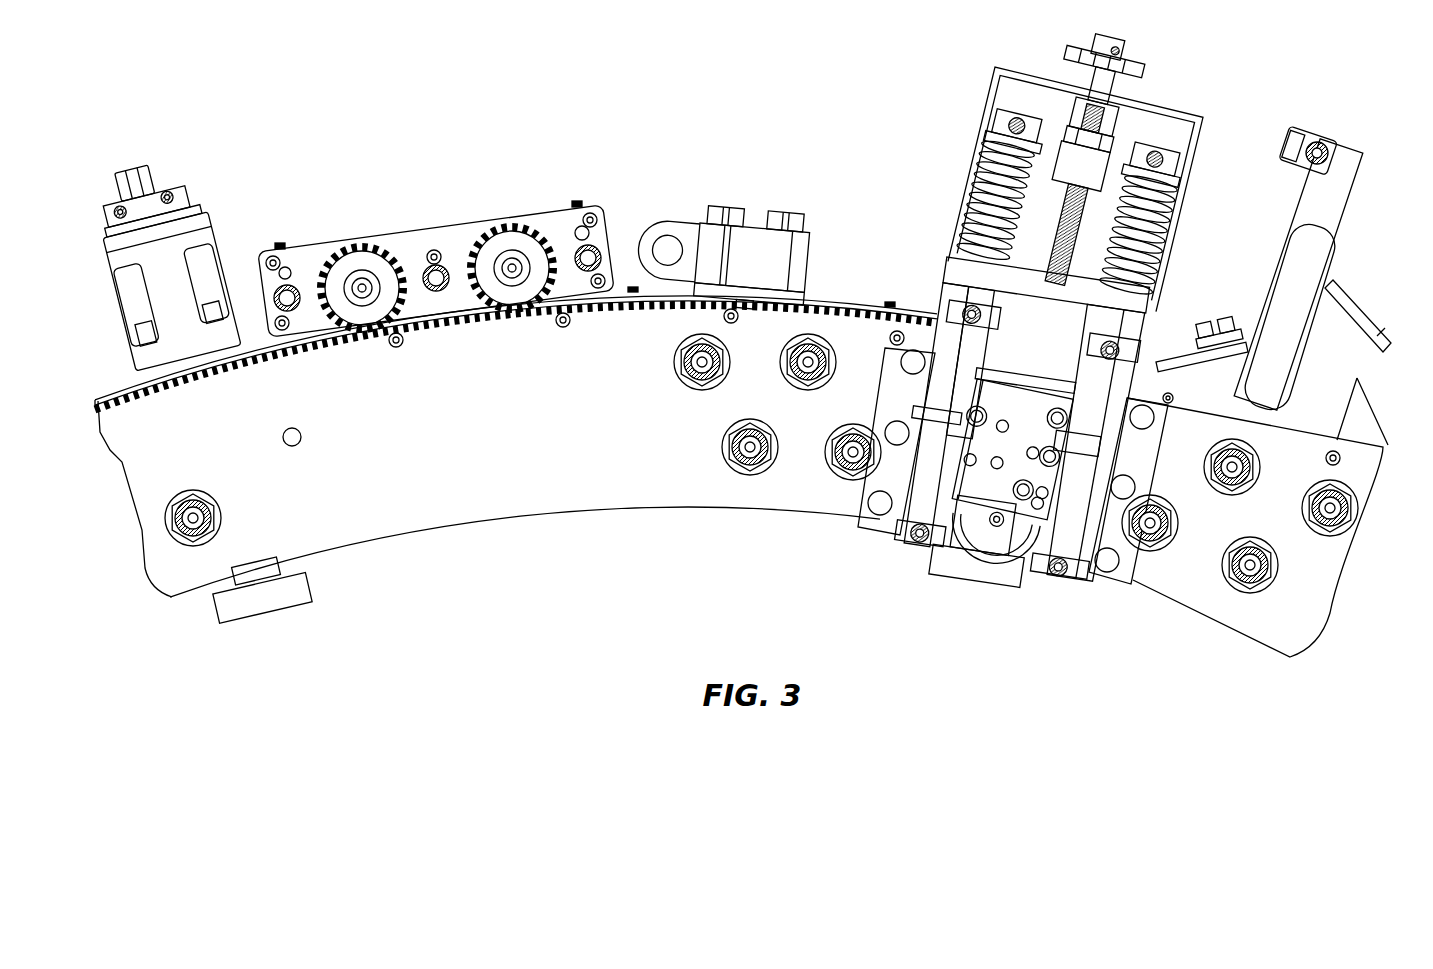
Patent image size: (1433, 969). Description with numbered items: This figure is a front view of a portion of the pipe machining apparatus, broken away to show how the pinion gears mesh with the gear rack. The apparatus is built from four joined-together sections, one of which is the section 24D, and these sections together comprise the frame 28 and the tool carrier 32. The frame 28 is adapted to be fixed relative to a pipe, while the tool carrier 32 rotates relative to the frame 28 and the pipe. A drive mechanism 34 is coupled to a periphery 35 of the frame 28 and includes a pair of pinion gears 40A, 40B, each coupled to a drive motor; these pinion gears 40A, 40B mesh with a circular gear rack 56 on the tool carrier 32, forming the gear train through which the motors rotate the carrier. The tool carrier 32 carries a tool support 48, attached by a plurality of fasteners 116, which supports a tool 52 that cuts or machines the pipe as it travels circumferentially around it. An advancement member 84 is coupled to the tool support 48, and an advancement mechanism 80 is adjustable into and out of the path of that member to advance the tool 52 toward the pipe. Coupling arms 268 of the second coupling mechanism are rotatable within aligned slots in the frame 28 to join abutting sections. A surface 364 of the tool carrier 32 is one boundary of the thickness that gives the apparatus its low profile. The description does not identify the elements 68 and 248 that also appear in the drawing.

The frame 28 is at (127, 384).
The tool carrier 32 is at (345, 513).
The section 24D is at (522, 526).
The surface of the tool carrier 364 is at (625, 468).
The sensor 68 is at (185, 160).
The gear plate 248 is at (435, 230).
The coupling arms 268 is at (316, 258).
The periphery of the frame 35 is at (593, 256).
The pinion gear 40A is at (394, 232).
The pinion gear 40B is at (463, 295).
The drive mechanism 34 is at (448, 163).
The circular gear rack 56 is at (843, 305).
The tool support 48 is at (958, 115).
The advancement member 84 is at (1148, 62).
The tool 52 is at (973, 555).
The fasteners 116 is at (912, 350).
The advancement mechanism 80 is at (1365, 212).